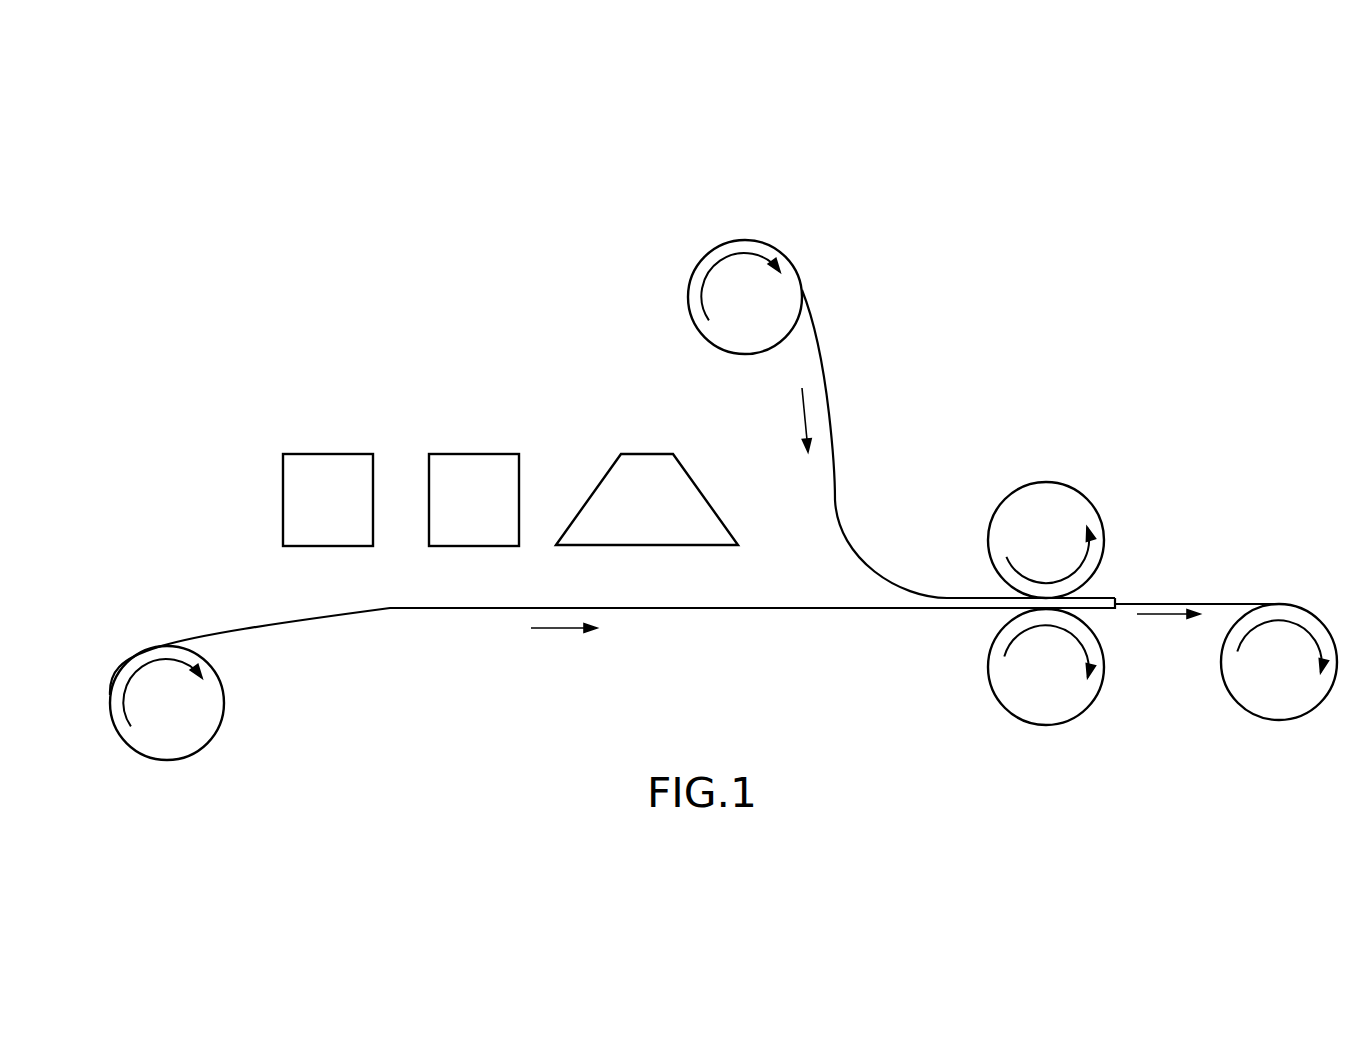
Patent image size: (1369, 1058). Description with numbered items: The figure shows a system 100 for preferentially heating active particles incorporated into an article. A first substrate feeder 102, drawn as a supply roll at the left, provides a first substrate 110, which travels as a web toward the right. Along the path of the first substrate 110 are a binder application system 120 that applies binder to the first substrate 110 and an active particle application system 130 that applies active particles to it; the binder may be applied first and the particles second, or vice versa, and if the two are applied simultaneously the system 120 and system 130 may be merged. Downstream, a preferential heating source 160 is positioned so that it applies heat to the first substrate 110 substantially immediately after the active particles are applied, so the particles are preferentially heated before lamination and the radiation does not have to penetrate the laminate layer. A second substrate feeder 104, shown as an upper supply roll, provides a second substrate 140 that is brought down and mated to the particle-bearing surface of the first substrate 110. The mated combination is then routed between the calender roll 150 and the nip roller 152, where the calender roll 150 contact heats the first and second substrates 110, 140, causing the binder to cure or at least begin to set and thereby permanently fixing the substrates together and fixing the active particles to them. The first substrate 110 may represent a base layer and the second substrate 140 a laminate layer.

The system 100 is at (708, 87).
The first substrate feeder 102 is at (177, 762).
The second substrate feeder 104 is at (748, 245).
The first substrate 110 is at (332, 610).
The binder application system 120 is at (318, 453).
The active particle application system 130 is at (463, 453).
The second substrate 140 is at (828, 426).
The calender roll 150 is at (1052, 723).
The nip roller 152 is at (1053, 482).
The preferential heating source 160 is at (604, 477).